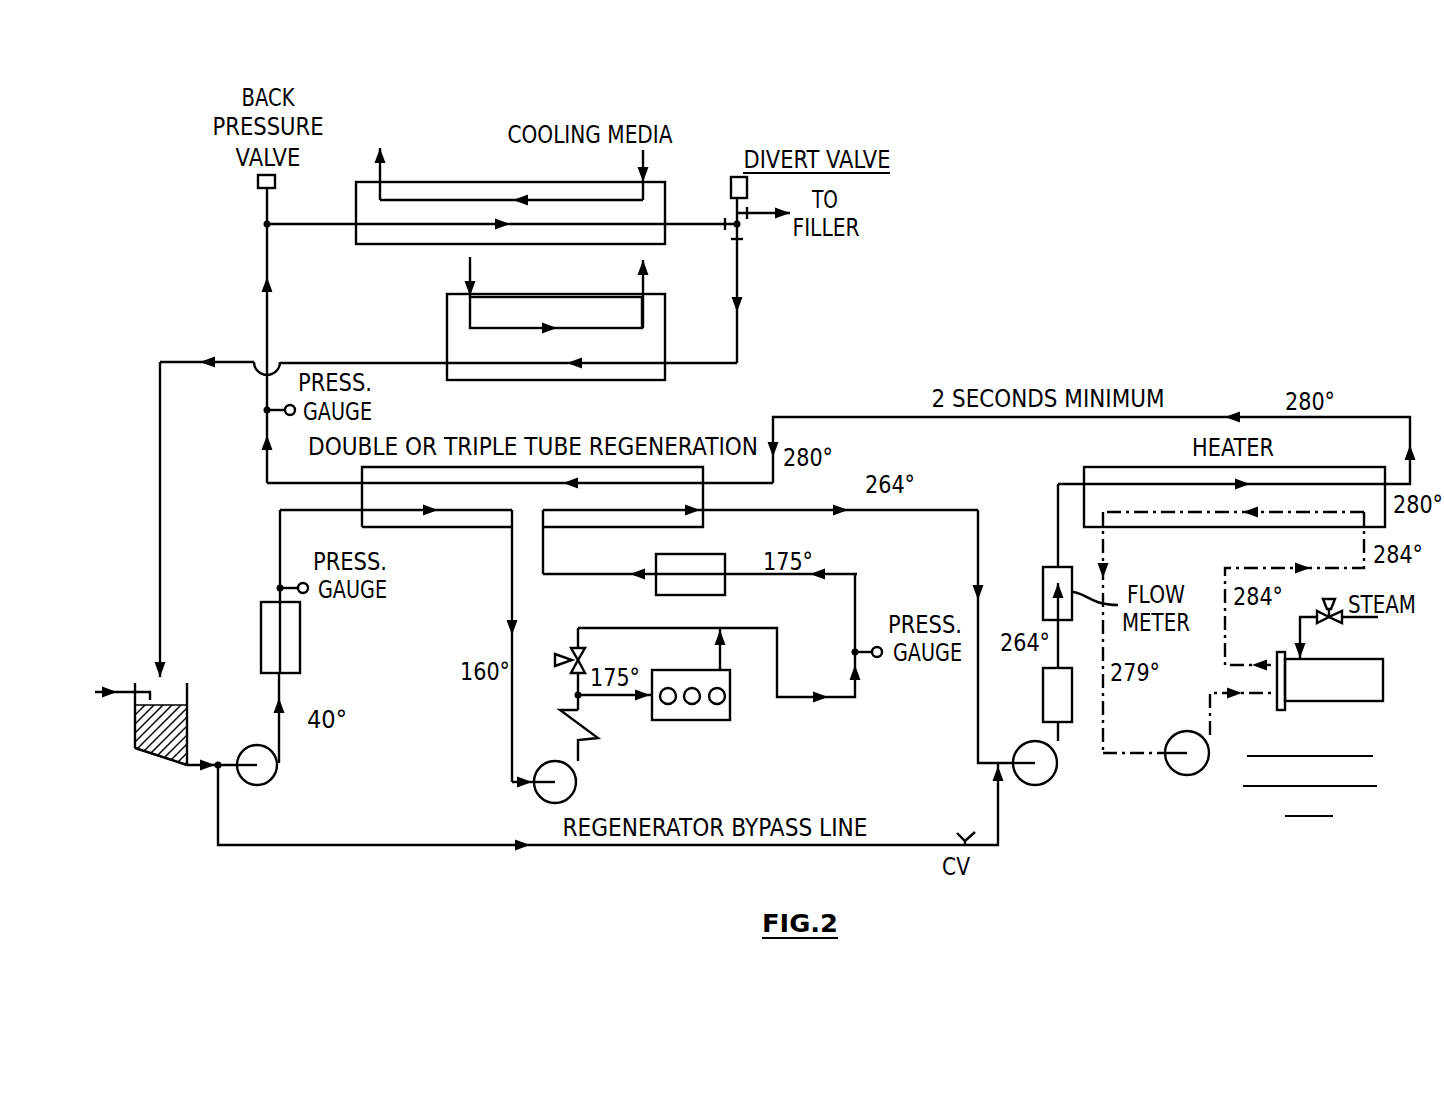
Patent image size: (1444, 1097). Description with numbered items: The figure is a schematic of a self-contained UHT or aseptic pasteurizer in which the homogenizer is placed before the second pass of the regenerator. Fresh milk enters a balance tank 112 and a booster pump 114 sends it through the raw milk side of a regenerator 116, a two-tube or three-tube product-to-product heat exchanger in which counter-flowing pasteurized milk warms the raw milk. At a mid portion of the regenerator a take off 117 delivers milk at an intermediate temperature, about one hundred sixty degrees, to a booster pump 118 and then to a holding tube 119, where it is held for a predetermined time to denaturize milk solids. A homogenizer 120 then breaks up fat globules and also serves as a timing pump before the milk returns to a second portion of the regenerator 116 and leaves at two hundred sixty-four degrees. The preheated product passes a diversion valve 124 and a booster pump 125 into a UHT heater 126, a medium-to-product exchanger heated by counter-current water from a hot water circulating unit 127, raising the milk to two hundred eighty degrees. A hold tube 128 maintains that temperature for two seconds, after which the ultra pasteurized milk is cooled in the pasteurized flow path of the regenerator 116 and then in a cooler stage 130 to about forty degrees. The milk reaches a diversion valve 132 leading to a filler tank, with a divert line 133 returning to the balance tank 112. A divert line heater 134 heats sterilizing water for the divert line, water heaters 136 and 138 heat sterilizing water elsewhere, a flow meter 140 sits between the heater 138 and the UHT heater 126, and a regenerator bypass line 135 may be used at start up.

The balance tank 112 is at (163, 757).
The booster pump 114 is at (273, 779).
The regenerator 116 is at (467, 527).
The take off 117 is at (512, 538).
The booster pump 118 is at (575, 796).
The holding tube 119 is at (597, 742).
The homogenizer 120 is at (692, 720).
The diversion valve 124 is at (977, 513).
The booster pump 125 is at (1046, 784).
The UHT heater 126 is at (1132, 466).
The hot water circulating unit 127 is at (1273, 735).
The hold tube 128 is at (1192, 417).
The cooler stage 130 is at (402, 244).
The diversion valve 132 is at (750, 247).
The divert line 133 is at (160, 443).
The divert line heater 134 is at (447, 352).
The regenerator bypass line 135 is at (447, 845).
The water heater 136 is at (300, 638).
The water heater 138 is at (1043, 693).
The flow meter 140 is at (1043, 580).